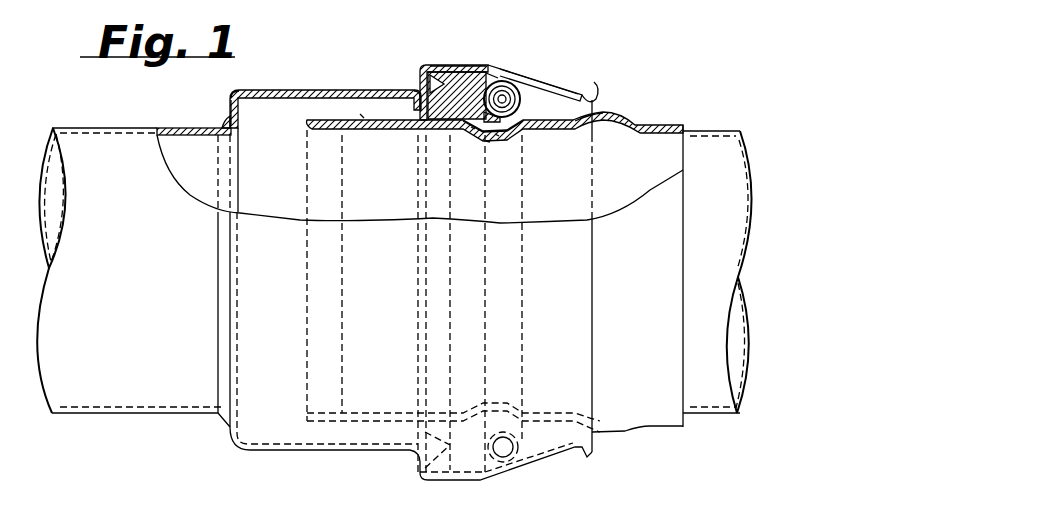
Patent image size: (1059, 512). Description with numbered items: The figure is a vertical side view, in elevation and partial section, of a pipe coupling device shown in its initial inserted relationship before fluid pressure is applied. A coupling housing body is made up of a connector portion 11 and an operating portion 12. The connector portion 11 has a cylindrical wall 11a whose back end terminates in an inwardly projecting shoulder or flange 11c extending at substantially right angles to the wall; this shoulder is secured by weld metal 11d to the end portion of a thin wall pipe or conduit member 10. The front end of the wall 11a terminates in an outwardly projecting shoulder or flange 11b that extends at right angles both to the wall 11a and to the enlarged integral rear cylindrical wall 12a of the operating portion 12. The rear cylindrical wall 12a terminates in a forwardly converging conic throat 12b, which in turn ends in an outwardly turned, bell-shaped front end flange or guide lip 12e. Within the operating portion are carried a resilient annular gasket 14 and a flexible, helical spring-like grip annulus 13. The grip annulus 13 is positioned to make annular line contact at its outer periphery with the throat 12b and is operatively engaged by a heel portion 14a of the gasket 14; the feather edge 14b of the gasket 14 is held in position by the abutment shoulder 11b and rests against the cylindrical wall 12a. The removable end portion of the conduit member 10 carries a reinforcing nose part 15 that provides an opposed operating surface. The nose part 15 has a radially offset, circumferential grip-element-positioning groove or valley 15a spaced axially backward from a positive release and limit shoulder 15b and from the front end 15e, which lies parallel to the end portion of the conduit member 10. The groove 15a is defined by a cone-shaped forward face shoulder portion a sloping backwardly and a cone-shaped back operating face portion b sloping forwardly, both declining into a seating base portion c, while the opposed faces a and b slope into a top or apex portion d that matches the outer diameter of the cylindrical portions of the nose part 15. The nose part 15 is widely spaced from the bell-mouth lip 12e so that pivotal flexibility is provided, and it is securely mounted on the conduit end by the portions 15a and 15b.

The thin wall pipe or conduit member 10 is at (90, 128).
The connector portion 11 is at (298, 245).
The cylindrical wall 11a is at (262, 90).
The outwardly projecting shoulder or flange 11b is at (417, 84).
The inwardly-projecting shoulder or flange 11c is at (245, 108).
The weld metal 11d is at (225, 118).
The operating portion 12 is at (531, 242).
The rear cylindrical wall 12a is at (450, 64).
The conic operating-surface wall or throat 12b is at (556, 92).
The bell-shaped front end flange or guide lip 12e is at (596, 86).
The flexible grip annulus 13 is at (518, 86).
The resilient annular gasket 14 is at (469, 252).
The heel portion 14a is at (488, 78).
The feather edge 14b is at (434, 74).
The nose part 15 is at (524, 261).
The grip-element-positioning portion, groove or valley 15a is at (477, 142).
The positive release and limit shoulder 15b is at (580, 129).
The front end 15e is at (685, 230).
The forward face shoulder portion a is at (497, 135).
The back face or operating surface portion b is at (473, 128).
The seating base portion c is at (488, 142).
The top or apex portion d is at (362, 116).